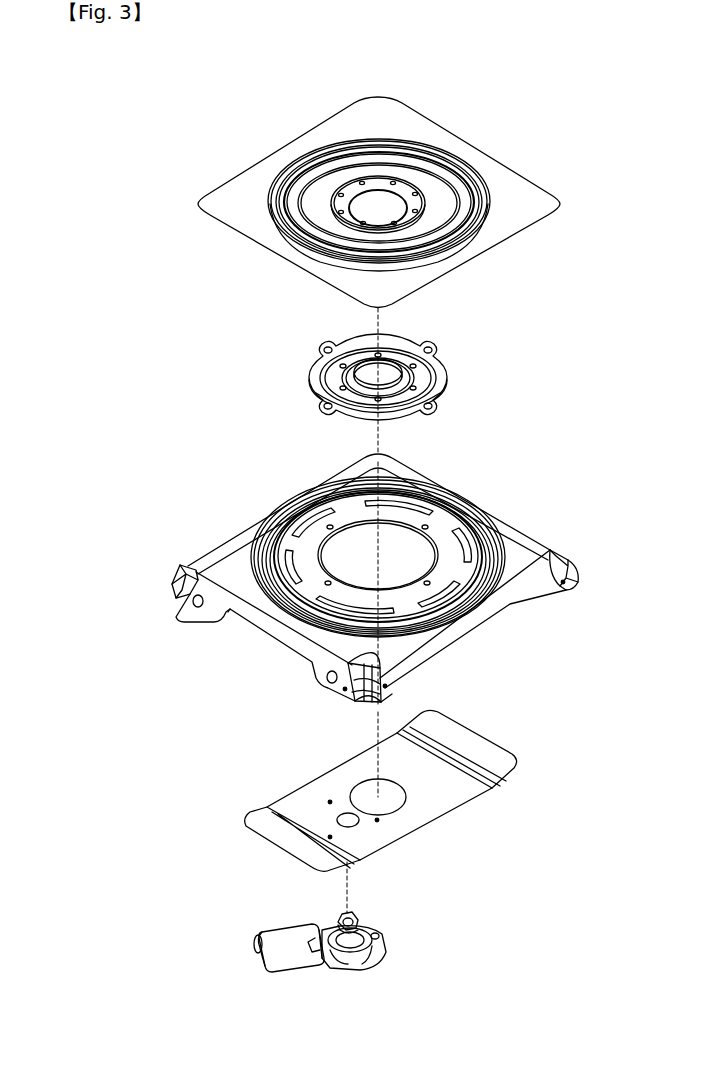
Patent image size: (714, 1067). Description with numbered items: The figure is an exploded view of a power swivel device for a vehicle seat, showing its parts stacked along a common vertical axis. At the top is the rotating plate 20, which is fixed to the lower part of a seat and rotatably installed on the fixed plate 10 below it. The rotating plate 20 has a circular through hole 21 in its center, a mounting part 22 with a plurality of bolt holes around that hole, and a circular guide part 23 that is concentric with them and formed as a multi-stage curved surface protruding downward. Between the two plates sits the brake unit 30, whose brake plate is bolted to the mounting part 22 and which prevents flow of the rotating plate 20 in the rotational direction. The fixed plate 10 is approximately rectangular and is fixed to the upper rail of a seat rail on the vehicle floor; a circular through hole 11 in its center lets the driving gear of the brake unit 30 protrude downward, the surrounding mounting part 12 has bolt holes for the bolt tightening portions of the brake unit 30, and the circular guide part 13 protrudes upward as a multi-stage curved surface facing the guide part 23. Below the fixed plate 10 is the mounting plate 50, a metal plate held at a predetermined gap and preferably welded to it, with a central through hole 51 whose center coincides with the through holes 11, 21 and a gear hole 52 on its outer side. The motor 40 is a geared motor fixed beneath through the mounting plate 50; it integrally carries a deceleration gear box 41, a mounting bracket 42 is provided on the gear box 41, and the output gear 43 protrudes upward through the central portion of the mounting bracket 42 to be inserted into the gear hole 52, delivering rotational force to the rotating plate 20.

The fixed plate 10 is at (360, 574).
The through hole 11 is at (350, 540).
The mounting part 12 is at (440, 540).
The guide part 13 is at (272, 520).
The rotating plate 20 is at (356, 199).
The through hole 21 is at (368, 198).
The mounting part 22 is at (408, 198).
The guide part 23 is at (478, 186).
The brake unit 30 is at (300, 356).
The motor 40 is at (324, 902).
The gear box 41 is at (368, 958).
The mounting bracket 42 is at (382, 933).
The output gear 43 is at (360, 917).
The mounting plate 50 is at (356, 780).
The through hole 51 is at (390, 800).
The gear hole 52 is at (343, 815).